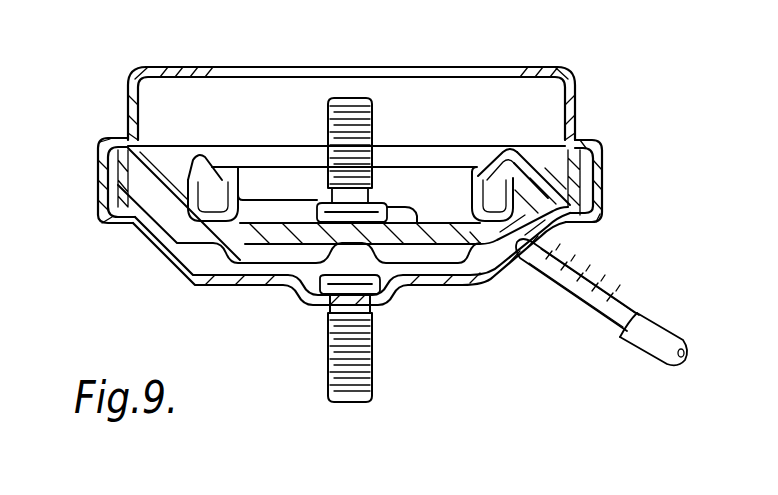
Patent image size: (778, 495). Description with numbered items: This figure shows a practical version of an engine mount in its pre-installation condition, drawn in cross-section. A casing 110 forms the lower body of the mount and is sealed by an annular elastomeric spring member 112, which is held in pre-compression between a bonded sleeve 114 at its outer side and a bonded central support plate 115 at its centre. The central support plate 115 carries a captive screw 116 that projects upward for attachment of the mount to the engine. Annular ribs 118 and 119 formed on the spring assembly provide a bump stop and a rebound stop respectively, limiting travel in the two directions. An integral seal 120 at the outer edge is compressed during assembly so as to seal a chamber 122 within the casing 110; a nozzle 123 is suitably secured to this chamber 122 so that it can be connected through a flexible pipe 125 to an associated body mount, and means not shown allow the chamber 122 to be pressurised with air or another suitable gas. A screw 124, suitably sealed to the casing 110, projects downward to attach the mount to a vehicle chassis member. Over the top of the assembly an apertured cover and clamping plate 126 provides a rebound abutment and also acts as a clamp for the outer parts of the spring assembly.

The casing 110 is at (512, 283).
The annular elastomeric spring member 112 is at (538, 172).
The bonded sleeve 114 is at (578, 171).
The bonded central support plate 115 is at (437, 215).
The captive screw 116 is at (375, 112).
The annular rib 118 is at (473, 252).
The annular rib 119 is at (482, 172).
The integral seal 120 is at (123, 171).
The chamber 122 is at (197, 265).
The nozzle 123 is at (558, 242).
The screw 124 is at (335, 357).
The flexible pipe 125 is at (630, 297).
The apertured cover and clamping plate 126 is at (155, 67).